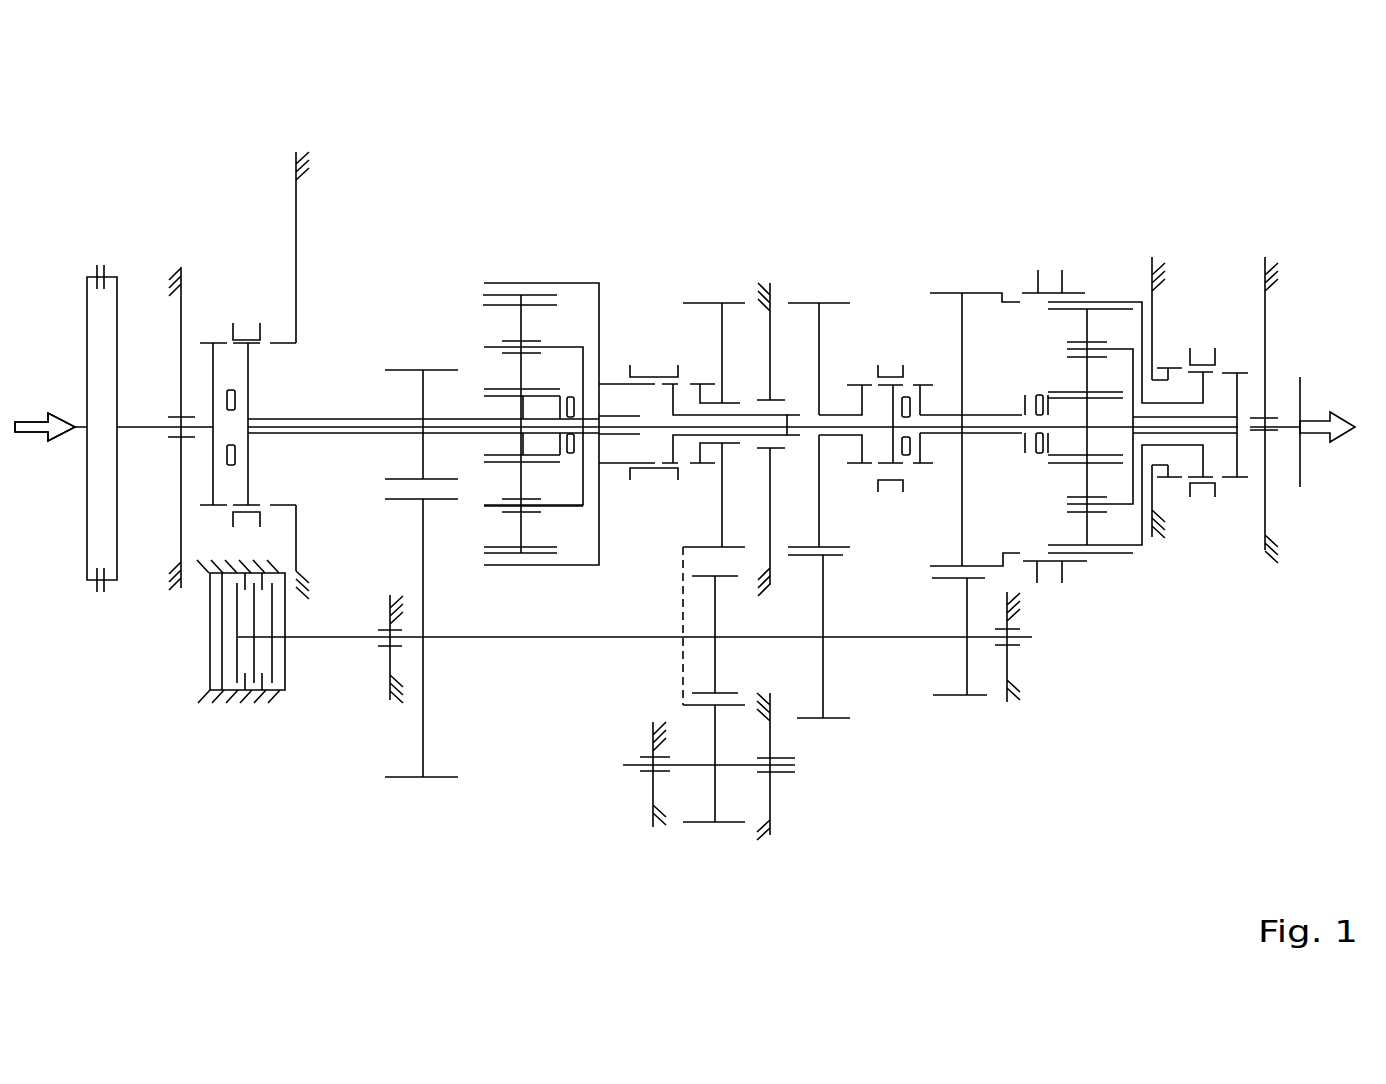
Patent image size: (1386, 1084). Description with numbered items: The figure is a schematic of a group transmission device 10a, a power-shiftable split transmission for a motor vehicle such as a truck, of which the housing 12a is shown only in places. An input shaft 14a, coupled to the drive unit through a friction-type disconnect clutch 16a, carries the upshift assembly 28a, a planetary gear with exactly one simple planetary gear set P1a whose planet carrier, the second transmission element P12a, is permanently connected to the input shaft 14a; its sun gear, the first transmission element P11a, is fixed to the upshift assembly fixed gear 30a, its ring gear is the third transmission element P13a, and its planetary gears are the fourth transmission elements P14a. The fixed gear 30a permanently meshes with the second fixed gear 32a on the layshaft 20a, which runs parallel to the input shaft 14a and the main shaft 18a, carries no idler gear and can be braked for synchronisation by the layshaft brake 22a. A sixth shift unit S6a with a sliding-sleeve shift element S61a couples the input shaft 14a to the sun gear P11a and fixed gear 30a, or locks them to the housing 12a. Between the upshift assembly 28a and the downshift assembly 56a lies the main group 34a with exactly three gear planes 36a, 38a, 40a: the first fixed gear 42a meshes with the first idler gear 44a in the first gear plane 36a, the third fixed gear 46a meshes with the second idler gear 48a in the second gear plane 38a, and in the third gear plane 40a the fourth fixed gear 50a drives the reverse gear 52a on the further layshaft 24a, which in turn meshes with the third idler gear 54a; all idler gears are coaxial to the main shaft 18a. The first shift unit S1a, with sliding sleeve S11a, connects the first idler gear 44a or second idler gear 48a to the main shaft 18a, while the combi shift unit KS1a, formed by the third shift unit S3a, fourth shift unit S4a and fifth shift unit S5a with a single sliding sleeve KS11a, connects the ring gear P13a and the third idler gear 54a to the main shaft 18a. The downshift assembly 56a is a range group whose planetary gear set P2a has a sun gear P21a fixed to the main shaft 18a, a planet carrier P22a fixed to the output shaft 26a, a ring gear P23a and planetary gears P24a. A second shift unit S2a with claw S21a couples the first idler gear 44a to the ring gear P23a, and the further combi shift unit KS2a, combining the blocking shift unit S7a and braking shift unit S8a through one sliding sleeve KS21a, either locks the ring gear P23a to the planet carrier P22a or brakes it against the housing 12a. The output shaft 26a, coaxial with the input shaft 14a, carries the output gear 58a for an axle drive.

The group transmission device 10a is at (145, 150).
The disconnect clutch 16a is at (87, 266).
The input shaft 14a is at (153, 417).
The housing 12a is at (297, 205).
The sixth shift unit S6a is at (257, 323).
The shift element of the sixth shift unit S61a is at (247, 310).
The layshaft brake 22a is at (183, 667).
The layshaft 20a is at (318, 640).
The upshift assembly fixed gear 30a is at (393, 368).
The second fixed gear 32a is at (405, 778).
The upshift assembly 28a is at (475, 251).
The planetary gear set of the upshift assembly P1a is at (522, 572).
The first transmission element of the upshift assembly P11a is at (517, 408).
The second transmission element of the upshift assembly P12a is at (580, 345).
The third transmission element of the upshift assembly P13a is at (568, 567).
The fourth transmission elements of the upshift assembly P14a is at (522, 522).
The third shift unit S3a is at (652, 365).
The fourth shift unit S4a is at (687, 365).
The fifth shift unit S5a is at (700, 365).
The combi shift unit KS1a is at (662, 348).
The shift element of the combi shift unit KS11a is at (645, 482).
The third gear plane 40a is at (722, 300).
The third idler gear 54a is at (740, 303).
The second idler gear 48a is at (800, 420).
The main shaft 18a is at (772, 290).
The second gear plane 38a is at (820, 300).
The third fixed gear 46a is at (837, 720).
The first shift unit S1a is at (888, 495).
The shift element of the first shift unit S11a is at (891, 502).
The main group 34a is at (892, 246).
The first gear plane 36a is at (962, 283).
The first idler gear 44a is at (987, 292).
The second shift unit S2a is at (1048, 266).
The shift element of the second shift unit S21a is at (1048, 565).
The first fixed gear 42a is at (970, 698).
The planetary gear set of the downshift assembly P2a is at (1095, 572).
The first transmission element of the downshift assembly P21a is at (1087, 525).
The second transmission element of the downshift assembly P22a is at (1117, 350).
The third transmission element of the downshift assembly P23a is at (1113, 552).
The fourth transmission elements of the downshift assembly P24a is at (1087, 442).
The downshift assembly 56a is at (1125, 288).
The braking shift unit S8a is at (1177, 341).
The blocking shift unit S7a is at (1228, 340).
The further combi shift unit KS2a is at (1200, 333).
The shift element of the further combi shift unit KS21a is at (1200, 498).
The output shaft 26a is at (1290, 440).
The output gear 58a is at (1300, 377).
The further layshaft 24a is at (680, 766).
The fourth fixed gear 50a is at (710, 650).
The reverse gear 52a is at (727, 823).